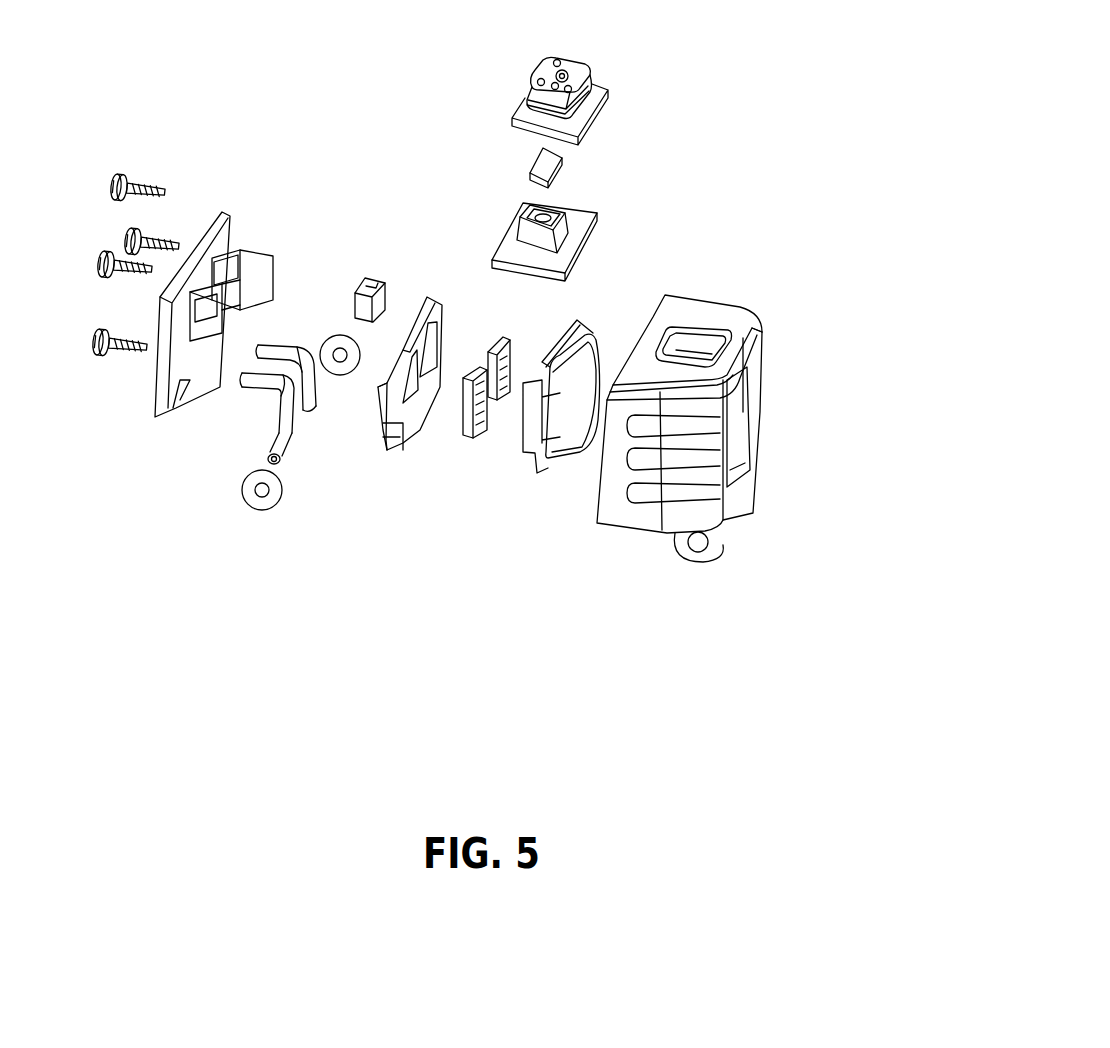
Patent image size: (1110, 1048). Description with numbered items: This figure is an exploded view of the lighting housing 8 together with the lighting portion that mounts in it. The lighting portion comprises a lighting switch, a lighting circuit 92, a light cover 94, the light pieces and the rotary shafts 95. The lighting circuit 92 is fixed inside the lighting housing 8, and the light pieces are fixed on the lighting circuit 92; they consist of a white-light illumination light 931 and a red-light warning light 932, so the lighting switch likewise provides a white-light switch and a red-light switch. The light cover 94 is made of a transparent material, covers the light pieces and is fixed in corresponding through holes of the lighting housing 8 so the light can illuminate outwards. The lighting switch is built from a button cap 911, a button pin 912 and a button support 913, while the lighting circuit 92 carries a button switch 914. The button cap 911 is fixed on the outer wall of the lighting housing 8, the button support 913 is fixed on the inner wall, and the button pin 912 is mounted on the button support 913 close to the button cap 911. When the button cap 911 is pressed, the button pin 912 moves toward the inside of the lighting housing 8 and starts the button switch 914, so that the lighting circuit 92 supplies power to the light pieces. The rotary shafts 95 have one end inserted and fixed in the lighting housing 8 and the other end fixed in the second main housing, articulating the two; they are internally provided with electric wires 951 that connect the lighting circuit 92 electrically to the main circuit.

The lighting housing 8 is at (735, 458).
The lighting circuit 92 is at (402, 442).
The light cover 94 is at (590, 328).
The rotary shafts 95 is at (322, 420).
The electric wires 951 is at (284, 466).
The button cap 911 is at (573, 68).
The button pin 912 is at (567, 160).
The button support 913 is at (578, 230).
The button switch 914 is at (362, 276).
The white-light illumination light 931 is at (494, 330).
The red-light warning light 932 is at (465, 362).